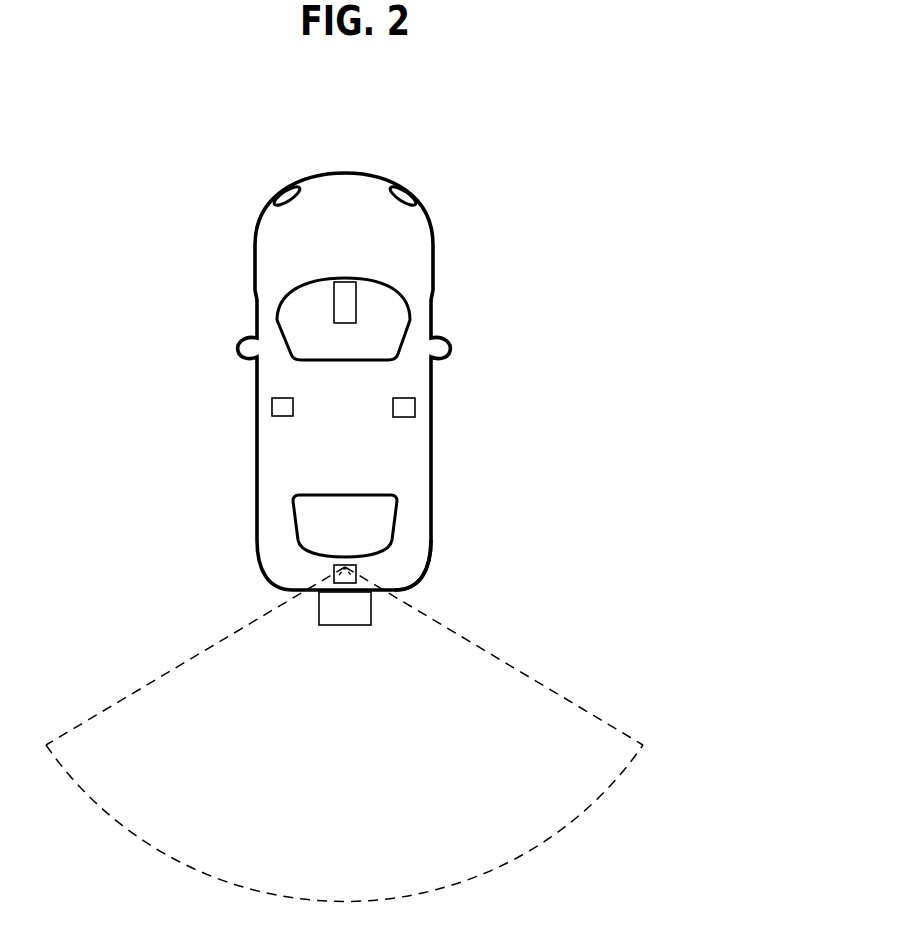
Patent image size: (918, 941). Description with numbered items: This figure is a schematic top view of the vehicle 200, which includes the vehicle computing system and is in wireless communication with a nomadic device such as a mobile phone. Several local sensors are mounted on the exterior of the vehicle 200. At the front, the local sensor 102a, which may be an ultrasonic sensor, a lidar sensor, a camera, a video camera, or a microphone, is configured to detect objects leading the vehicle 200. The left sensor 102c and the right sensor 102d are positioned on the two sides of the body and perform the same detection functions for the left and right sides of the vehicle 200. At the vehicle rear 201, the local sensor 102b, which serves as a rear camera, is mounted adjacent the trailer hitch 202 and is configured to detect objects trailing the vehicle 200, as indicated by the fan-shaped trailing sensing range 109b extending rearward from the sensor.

The vehicle 200 is at (700, 130).
The local sensor 102a is at (344, 307).
The local sensor 102b is at (357, 574).
The left sensor 102c is at (282, 407).
The right sensor 102d is at (406, 406).
The vehicle rear 201 is at (412, 588).
The trailer hitch 202 is at (343, 615).
The trailing sensing range 109b is at (620, 731).